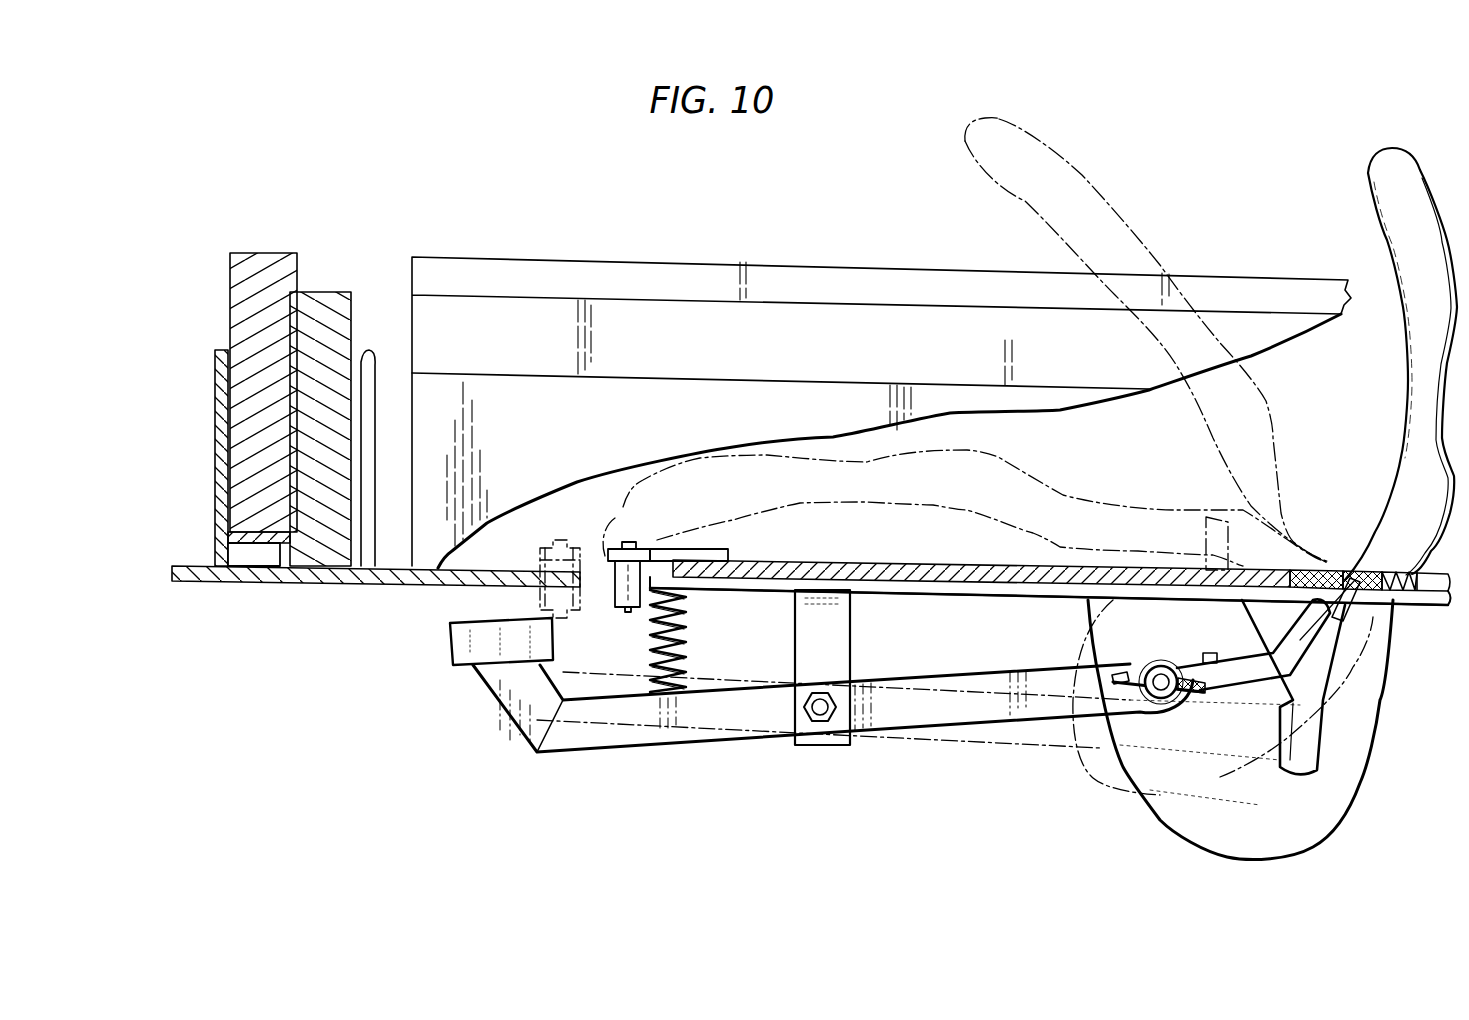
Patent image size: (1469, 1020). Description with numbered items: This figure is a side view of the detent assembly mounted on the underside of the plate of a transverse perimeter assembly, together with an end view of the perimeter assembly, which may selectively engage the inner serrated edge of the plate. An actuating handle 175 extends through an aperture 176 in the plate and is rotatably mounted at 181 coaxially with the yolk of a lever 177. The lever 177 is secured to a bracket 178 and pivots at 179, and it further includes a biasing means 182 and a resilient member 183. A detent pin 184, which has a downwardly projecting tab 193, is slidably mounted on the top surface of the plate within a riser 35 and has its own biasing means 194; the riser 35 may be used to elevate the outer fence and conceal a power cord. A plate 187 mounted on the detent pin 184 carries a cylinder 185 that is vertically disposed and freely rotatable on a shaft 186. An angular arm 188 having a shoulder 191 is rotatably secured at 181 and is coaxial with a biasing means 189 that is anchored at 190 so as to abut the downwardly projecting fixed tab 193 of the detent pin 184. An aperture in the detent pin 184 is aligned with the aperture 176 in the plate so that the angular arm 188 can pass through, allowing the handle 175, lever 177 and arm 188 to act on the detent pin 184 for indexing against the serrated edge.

The riser 35 is at (263, 557).
The actuating handle 175 is at (1408, 445).
The aperture 176 is at (1287, 578).
The lever 177 is at (965, 712).
The bracket 178 is at (800, 663).
The pivot 179 is at (820, 716).
The rotatable mounting 181 is at (1185, 702).
The biasing means 182 is at (686, 651).
The resilient member 183 is at (451, 645).
The detent pin 184 is at (850, 566).
The cylinder 185 is at (613, 583).
The shaft 186 is at (633, 546).
The plate 187 is at (705, 548).
The angular arm 188 is at (1233, 688).
The biasing means 189 is at (1160, 665).
The anchor 190 is at (1118, 672).
The shoulder 191 is at (1210, 655).
The downwardly projecting tab 193 is at (1343, 612).
The biasing means 194 is at (1417, 606).